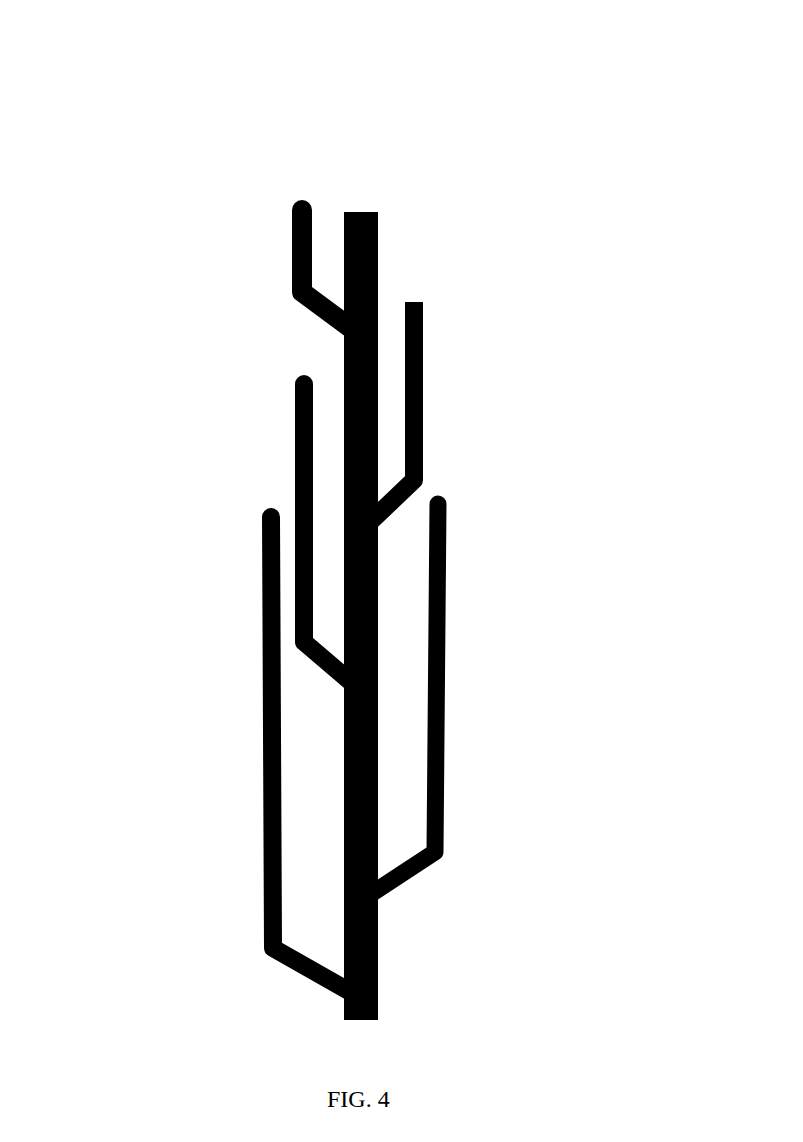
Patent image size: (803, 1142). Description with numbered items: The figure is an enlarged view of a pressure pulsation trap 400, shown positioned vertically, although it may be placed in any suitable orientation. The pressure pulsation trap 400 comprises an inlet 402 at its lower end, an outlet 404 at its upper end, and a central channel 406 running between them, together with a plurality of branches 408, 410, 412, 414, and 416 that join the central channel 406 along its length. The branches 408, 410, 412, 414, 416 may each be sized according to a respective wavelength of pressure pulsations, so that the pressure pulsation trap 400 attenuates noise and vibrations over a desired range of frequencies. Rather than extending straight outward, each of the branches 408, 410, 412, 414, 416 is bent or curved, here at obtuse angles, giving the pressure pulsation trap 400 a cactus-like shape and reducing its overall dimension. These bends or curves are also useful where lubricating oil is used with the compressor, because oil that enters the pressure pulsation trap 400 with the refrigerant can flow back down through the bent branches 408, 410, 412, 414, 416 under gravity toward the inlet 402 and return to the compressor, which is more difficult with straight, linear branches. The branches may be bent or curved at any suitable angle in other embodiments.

The pressure pulsation trap 400 is at (210, 86).
The inlet 402 is at (378, 1012).
The outlet 404 is at (378, 216).
The central channel 406 is at (378, 930).
The branch 408 is at (264, 727).
The branch 410 is at (447, 548).
The branch 412 is at (295, 417).
The branch 414 is at (421, 408).
The branch 416 is at (292, 262).